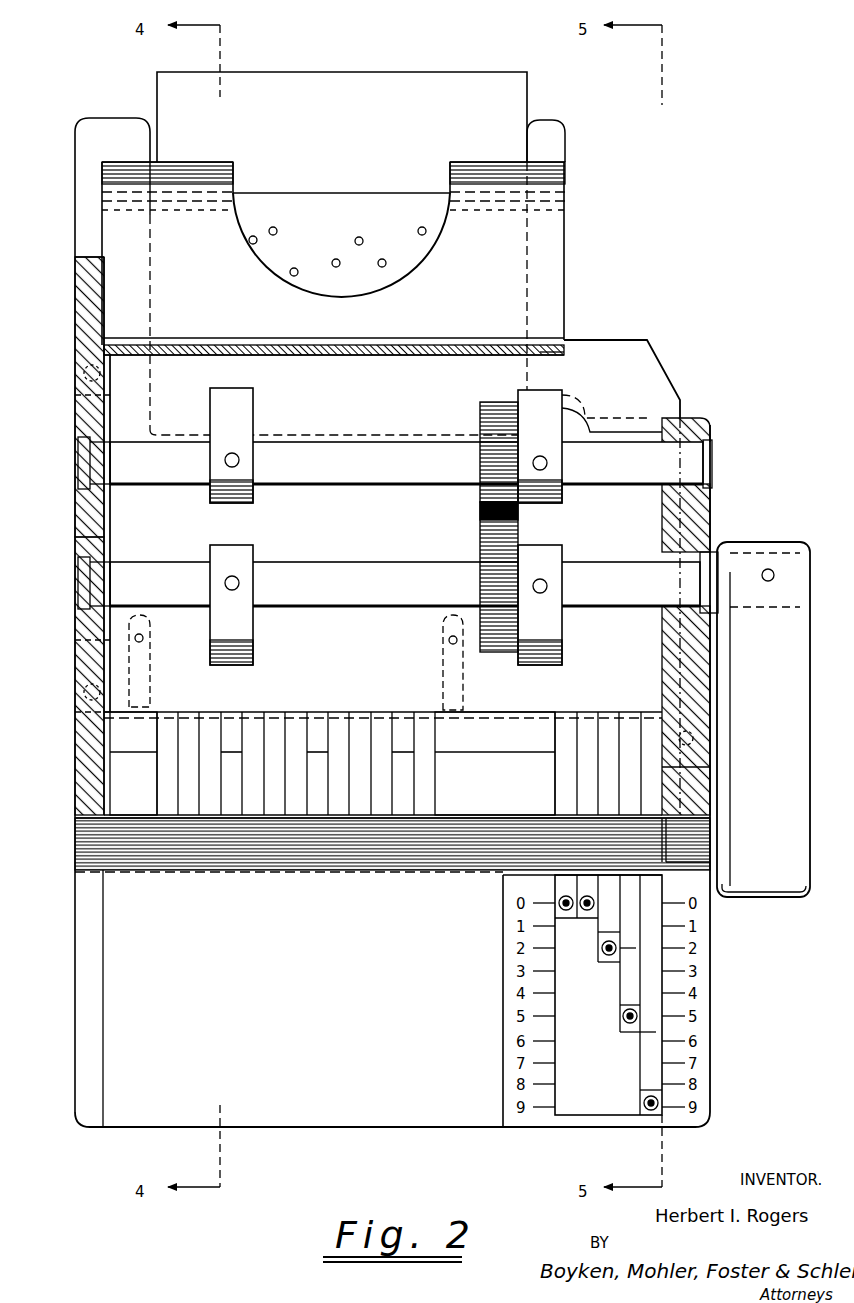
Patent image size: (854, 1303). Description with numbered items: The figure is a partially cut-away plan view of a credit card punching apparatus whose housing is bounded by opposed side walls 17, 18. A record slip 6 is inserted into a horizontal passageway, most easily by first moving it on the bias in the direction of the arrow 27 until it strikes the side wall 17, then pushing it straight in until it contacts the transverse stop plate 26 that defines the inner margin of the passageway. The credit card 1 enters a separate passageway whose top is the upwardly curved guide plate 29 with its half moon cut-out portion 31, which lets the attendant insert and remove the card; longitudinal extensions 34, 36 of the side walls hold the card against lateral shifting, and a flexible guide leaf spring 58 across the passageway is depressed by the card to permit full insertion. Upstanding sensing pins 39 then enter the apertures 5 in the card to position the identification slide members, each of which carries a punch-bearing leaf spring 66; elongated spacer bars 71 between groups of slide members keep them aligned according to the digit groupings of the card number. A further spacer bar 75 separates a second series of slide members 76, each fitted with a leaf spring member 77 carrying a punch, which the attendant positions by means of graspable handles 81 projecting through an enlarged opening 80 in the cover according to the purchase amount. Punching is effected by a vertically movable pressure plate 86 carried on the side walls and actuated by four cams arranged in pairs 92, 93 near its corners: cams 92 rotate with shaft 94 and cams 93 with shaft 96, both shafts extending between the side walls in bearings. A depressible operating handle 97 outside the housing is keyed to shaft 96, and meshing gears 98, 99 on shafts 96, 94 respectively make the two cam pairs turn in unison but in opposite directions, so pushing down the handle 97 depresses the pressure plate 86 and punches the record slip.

The credit card 1 is at (362, 191).
The aperture 5 is at (378, 266).
The record slip 6 is at (668, 360).
The side wall 17 is at (84, 776).
The side wall 18 is at (708, 522).
The stop plate 26 is at (138, 748).
The arrow 27 is at (620, 313).
The guide plate 29 is at (481, 279).
The half moon cut-out portion 31 is at (278, 252).
The longitudinal extension 34 is at (82, 282).
The longitudinal extension 36 is at (556, 150).
The sensing member 39 is at (356, 243).
The guide leaf spring 58 is at (386, 106).
The leaf spring 66 is at (210, 790).
The spacer bar 71 is at (238, 796).
The spacer bar 75 is at (500, 796).
The slide member 76 is at (610, 964).
The leaf spring member 77 is at (645, 780).
The opening 80 is at (575, 1118).
The handle 81 is at (587, 912).
The pressure plate 86 is at (448, 533).
The cam member 92 is at (242, 424).
The cam member 93 is at (242, 615).
The shaft 94 is at (373, 471).
The shaft 96 is at (369, 593).
The operating handle 97 is at (784, 796).
The gear 98 is at (503, 654).
The gear 99 is at (498, 400).